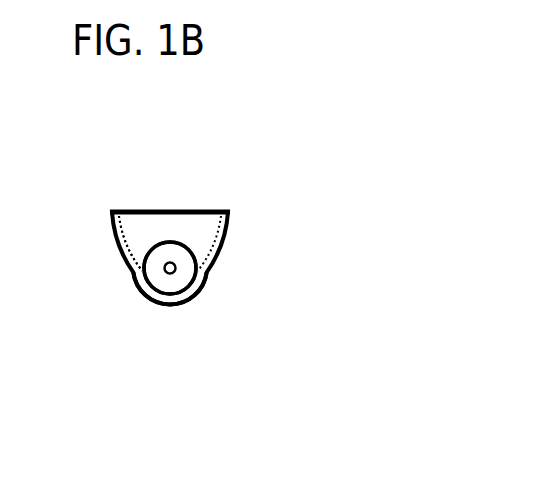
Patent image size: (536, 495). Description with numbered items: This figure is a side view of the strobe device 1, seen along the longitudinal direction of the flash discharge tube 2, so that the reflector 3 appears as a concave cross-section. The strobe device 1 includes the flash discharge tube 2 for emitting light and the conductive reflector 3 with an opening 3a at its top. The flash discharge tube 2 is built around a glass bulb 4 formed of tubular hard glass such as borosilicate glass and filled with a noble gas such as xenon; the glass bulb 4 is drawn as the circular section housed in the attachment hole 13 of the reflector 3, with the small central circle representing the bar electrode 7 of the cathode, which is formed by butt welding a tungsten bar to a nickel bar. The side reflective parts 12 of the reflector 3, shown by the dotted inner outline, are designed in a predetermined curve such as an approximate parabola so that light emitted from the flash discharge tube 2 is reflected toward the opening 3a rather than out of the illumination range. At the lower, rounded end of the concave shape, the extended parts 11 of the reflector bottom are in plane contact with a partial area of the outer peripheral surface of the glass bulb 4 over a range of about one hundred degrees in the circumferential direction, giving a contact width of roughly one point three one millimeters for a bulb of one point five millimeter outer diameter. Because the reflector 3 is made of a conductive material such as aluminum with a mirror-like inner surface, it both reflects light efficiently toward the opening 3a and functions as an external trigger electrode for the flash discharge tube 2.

The strobe device 1 is at (94, 119).
The flash discharge tube 2 is at (137, 258).
The conductive reflector 3 is at (207, 207).
The opening 3a is at (170, 210).
The glass bulb 4 is at (150, 270).
The bar electrode 7 is at (174, 268).
The extended parts 11 is at (167, 297).
The side reflective parts 12 is at (137, 222).
The attachment hole 13 is at (185, 245).